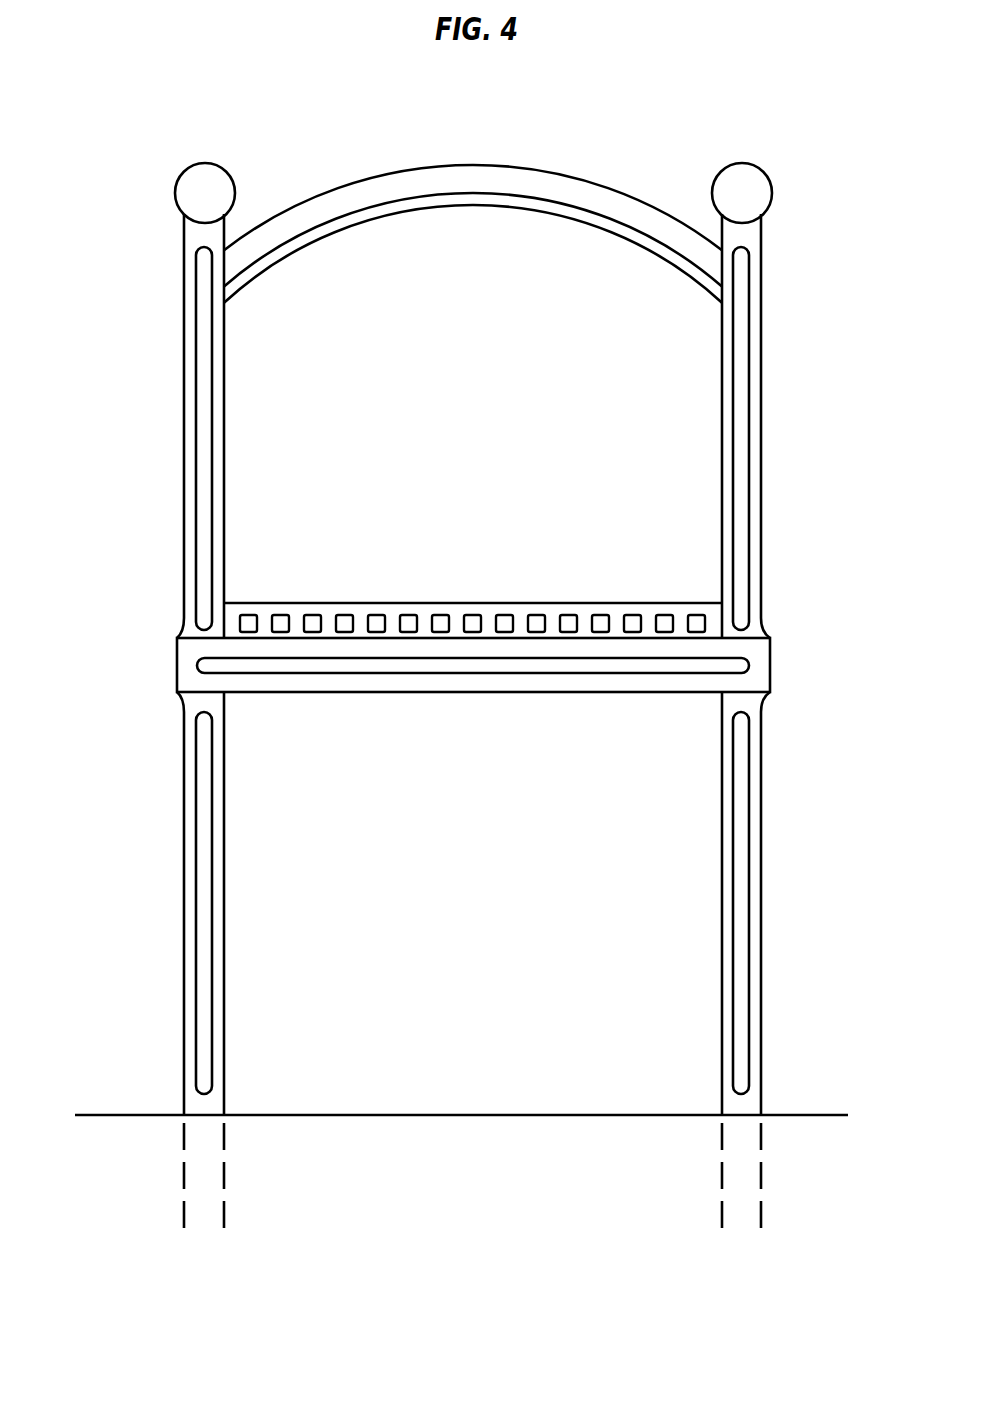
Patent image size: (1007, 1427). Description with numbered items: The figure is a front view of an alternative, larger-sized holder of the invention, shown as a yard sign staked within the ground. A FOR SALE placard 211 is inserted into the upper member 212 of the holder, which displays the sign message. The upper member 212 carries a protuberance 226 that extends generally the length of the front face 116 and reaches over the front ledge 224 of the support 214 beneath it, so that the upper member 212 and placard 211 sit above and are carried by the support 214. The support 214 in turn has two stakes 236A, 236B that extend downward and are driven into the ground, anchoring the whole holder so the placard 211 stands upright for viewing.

The FOR SALE placard 211 is at (529, 286).
The upper member 212 is at (199, 253).
The front face 116 is at (683, 333).
The protuberance 226 is at (229, 634).
The front ledge 224 is at (342, 668).
The support 214 is at (439, 961).
The stake 236A is at (215, 985).
The stake 236B is at (727, 932).